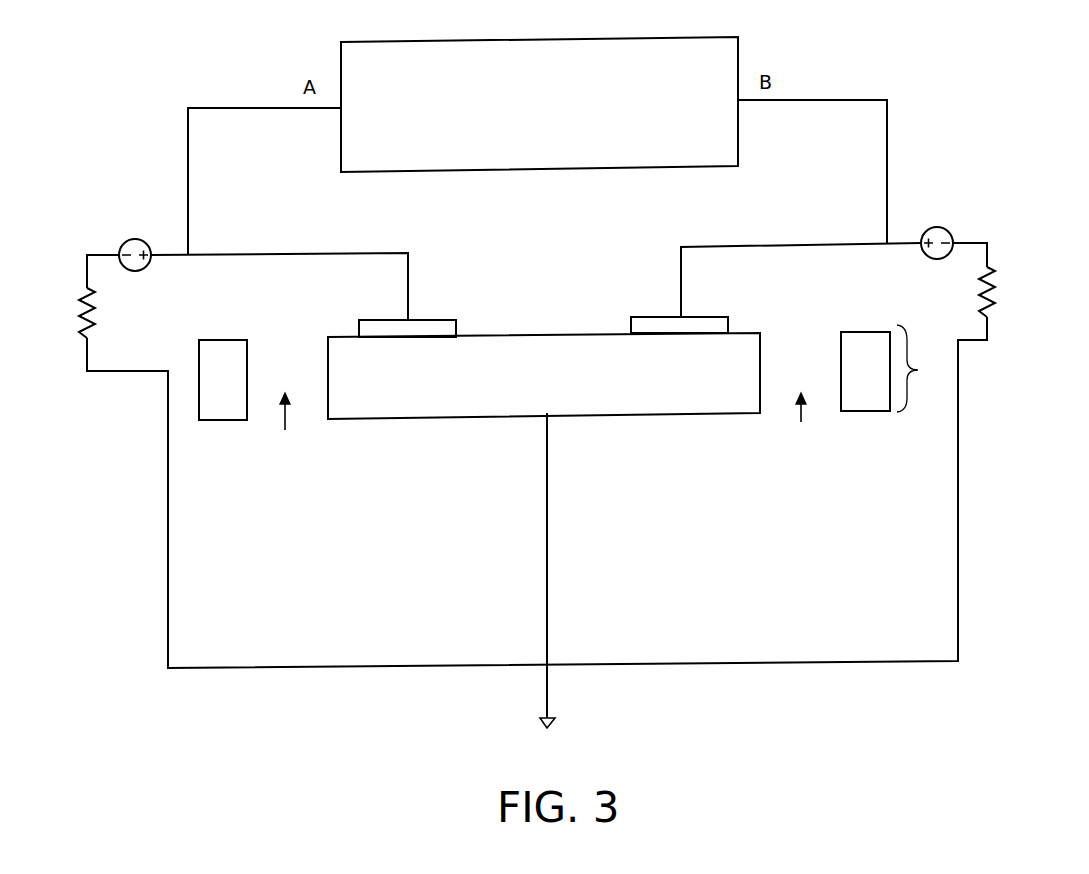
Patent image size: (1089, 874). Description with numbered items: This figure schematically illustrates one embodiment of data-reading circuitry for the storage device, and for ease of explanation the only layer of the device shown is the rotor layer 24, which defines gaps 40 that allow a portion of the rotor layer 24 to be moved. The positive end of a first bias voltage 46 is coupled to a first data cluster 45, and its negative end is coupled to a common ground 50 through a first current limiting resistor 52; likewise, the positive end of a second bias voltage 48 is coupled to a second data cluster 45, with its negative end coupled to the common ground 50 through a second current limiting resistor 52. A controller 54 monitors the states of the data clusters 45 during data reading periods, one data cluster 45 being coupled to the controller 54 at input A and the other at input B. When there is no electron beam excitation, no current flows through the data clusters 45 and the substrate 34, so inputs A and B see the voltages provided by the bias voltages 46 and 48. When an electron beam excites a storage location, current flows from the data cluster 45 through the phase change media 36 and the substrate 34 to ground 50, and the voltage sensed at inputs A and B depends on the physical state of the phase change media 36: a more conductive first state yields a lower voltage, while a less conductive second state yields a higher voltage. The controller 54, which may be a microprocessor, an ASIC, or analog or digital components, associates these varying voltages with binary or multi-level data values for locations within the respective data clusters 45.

The controller 54 is at (660, 50).
The bias voltage 46 is at (136, 271).
The bias voltage 48 is at (937, 260).
The current limiting resistor 52 is at (79, 327).
The substrate 34 is at (508, 398).
The phase change media 36 is at (543, 312).
The data cluster 45 is at (418, 330).
The rotor layer 24 is at (924, 368).
The gaps 40 is at (543, 429).
The common ground 50 is at (547, 707).